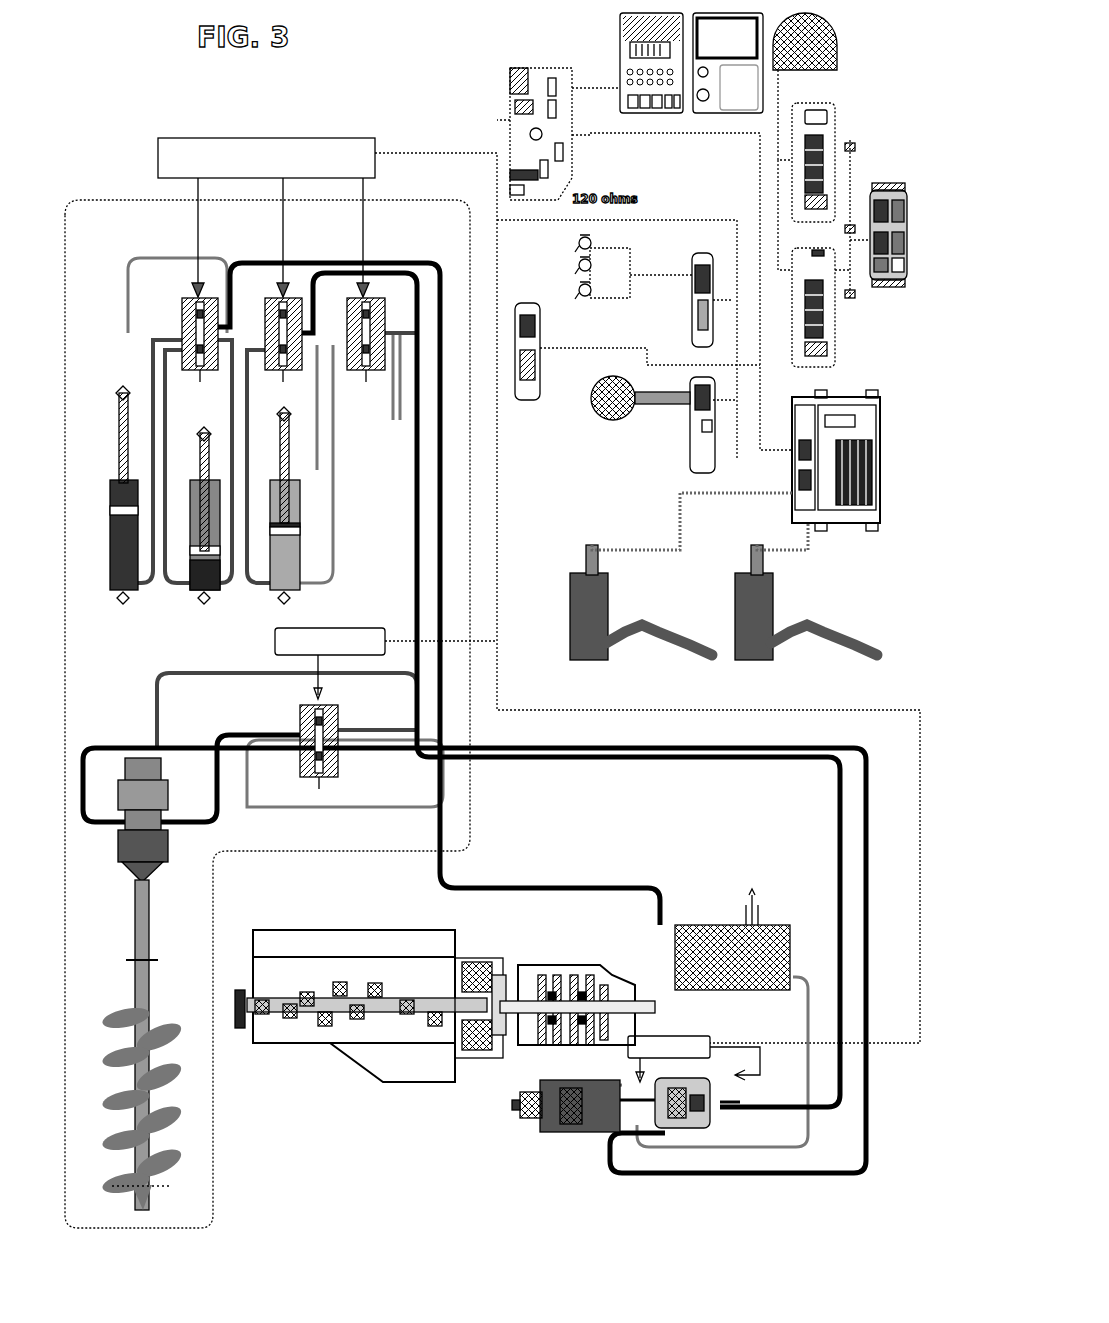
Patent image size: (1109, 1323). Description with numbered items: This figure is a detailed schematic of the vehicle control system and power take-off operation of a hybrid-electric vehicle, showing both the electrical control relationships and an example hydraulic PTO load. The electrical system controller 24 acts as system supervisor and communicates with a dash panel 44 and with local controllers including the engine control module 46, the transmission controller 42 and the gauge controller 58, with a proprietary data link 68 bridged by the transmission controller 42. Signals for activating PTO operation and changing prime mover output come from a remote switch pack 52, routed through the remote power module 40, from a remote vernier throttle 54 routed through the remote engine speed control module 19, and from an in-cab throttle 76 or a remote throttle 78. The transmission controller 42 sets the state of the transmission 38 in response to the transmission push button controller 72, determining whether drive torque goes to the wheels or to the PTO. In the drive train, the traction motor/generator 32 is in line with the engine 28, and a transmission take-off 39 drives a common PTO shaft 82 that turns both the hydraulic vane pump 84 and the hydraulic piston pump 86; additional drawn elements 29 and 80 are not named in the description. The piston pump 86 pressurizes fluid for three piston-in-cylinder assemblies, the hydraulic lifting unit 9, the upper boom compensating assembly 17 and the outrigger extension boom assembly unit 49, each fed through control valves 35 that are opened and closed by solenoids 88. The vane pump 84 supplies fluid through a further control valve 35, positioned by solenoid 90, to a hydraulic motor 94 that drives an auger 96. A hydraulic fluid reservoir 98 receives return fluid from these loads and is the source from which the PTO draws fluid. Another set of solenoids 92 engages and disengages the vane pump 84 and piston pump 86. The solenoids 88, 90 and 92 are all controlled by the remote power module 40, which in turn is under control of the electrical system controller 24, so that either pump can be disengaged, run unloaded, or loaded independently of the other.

The hydraulic lifting unit 9 is at (112, 482).
The upper boom compensating assembly 17 is at (182, 595).
The remote engine speed control module 19 is at (688, 456).
The electrical system controller 24 is at (505, 145).
The engine 28 is at (330, 1046).
The gears 29 is at (305, 1000).
The traction motor/generator 32 is at (500, 962).
The control valves 35 is at (182, 300).
The transmission 38 is at (575, 968).
The transmission take-off 39 is at (532, 1120).
The remote power module 40 is at (696, 258).
The transmission controller 42 is at (838, 352).
The dash panel 44 is at (625, 48).
The engine control module 46 is at (882, 493).
The outrigger extension boom assembly unit 49 is at (297, 555).
The remote switch pack 52 is at (565, 277).
The remote vernier throttle 54 is at (602, 420).
The gauge controller 58 is at (840, 56).
The data link 68 is at (856, 305).
The transmission push button controller 72 is at (904, 193).
The in-cab throttle 76 is at (787, 606).
The remote throttle 78 is at (622, 606).
The drive shaft 80 is at (655, 1007).
The PTO shaft 82 is at (728, 1104).
The hydraulic vane pump 84 is at (590, 1135).
The hydraulic piston pump 86 is at (695, 1125).
The solenoids 88 is at (202, 138).
The solenoid 90 is at (328, 628).
The solenoids 92 is at (712, 1038).
The hydraulic motor 94 is at (170, 853).
The auger 96 is at (165, 1130).
The hydraulic fluid reservoir 98 is at (690, 923).